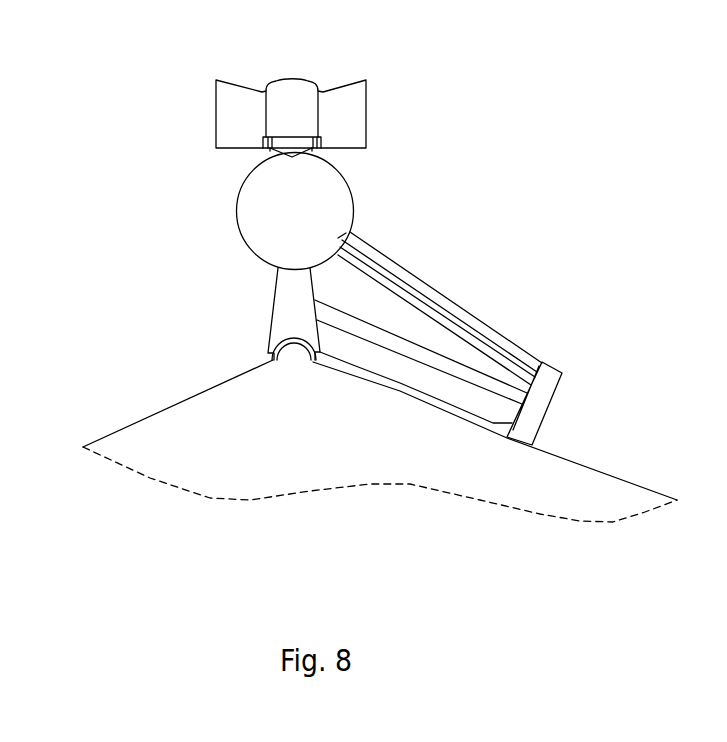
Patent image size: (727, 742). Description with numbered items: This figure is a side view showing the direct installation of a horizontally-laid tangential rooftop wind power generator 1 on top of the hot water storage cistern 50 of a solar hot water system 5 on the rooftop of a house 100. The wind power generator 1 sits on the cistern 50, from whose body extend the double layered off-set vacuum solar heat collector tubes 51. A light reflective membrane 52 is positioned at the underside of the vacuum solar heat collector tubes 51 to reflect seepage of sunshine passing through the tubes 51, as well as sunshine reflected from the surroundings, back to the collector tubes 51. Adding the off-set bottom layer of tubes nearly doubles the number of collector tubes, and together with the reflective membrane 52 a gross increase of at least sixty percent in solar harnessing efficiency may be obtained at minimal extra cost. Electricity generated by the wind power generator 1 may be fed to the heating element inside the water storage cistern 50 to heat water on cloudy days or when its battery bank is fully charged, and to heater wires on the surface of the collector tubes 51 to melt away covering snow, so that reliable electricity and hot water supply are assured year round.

The horizontally-laid tangential rooftop wind power generator 1 is at (283, 110).
The solar hot water system 5 is at (457, 268).
The hot water storage cistern 50 is at (273, 205).
The vacuum solar heat collector tubes 51 is at (465, 318).
The light reflective membrane 52 is at (437, 362).
The house 100 is at (260, 458).